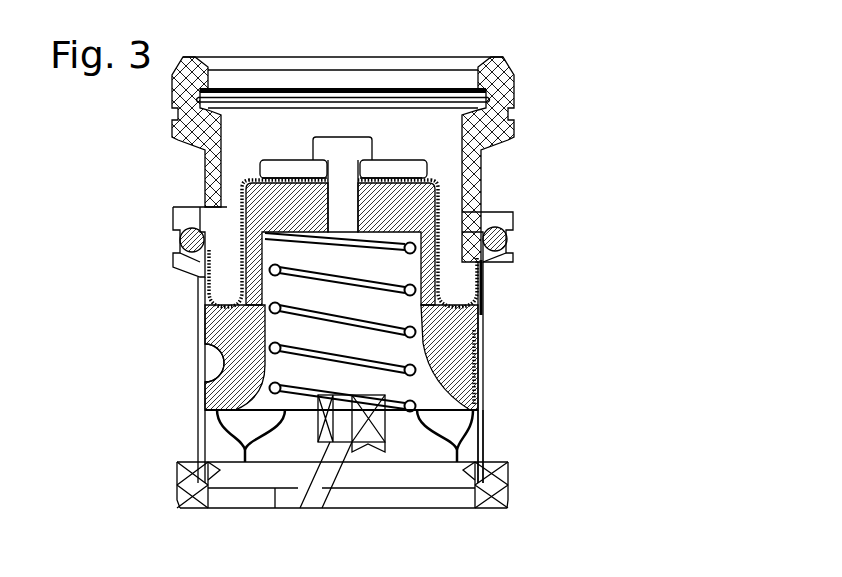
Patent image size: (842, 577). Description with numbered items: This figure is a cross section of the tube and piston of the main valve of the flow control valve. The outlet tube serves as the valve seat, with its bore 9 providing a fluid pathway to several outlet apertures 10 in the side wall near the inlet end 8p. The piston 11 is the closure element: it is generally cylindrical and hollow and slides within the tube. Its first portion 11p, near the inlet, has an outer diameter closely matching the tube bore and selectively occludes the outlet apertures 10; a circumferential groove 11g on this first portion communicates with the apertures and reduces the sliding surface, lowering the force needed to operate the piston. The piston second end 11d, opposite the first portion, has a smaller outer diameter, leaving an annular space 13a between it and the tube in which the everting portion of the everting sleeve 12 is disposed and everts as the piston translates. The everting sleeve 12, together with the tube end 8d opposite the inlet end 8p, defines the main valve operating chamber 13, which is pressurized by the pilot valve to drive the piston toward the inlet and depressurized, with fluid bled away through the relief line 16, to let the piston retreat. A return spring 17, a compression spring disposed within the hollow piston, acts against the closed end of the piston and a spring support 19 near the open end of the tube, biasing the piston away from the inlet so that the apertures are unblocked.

The relief line 16 is at (505, 78).
The tube end 8d is at (485, 186).
The main valve operating chamber 13 is at (283, 140).
The annular space 13a is at (230, 204).
The piston second end 11d is at (236, 287).
The everting sleeve 12 is at (440, 223).
The piston 11 is at (215, 322).
The circumferential groove 11g is at (223, 370).
The piston first portion 11p is at (215, 410).
The inlet end 8p is at (487, 447).
The return spring 17 is at (440, 363).
The outlet apertures 10 is at (258, 435).
The bore 9 is at (287, 487).
The spring support 19 is at (341, 480).